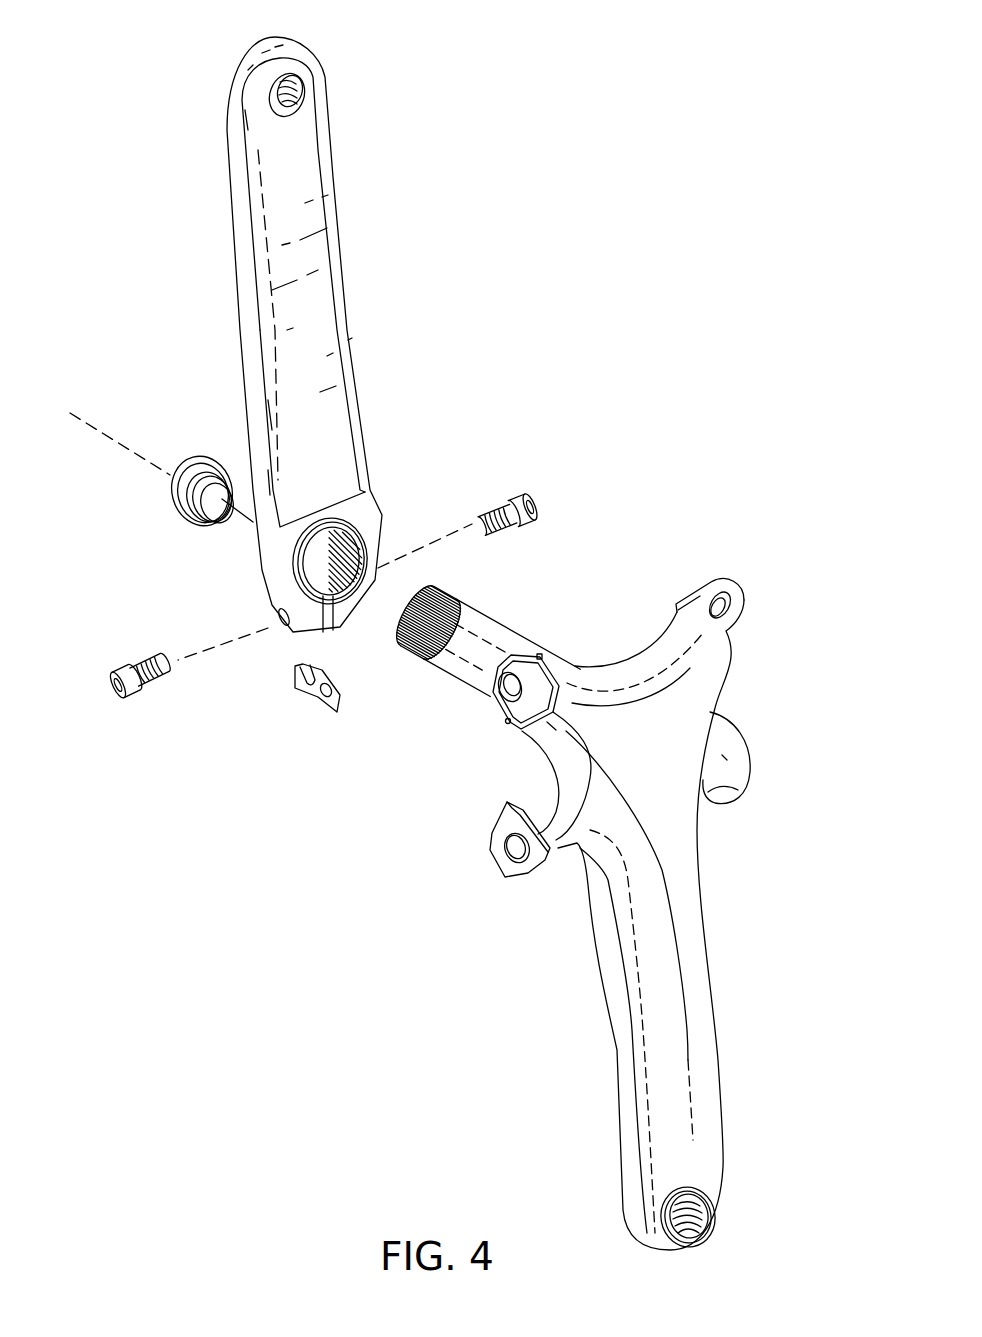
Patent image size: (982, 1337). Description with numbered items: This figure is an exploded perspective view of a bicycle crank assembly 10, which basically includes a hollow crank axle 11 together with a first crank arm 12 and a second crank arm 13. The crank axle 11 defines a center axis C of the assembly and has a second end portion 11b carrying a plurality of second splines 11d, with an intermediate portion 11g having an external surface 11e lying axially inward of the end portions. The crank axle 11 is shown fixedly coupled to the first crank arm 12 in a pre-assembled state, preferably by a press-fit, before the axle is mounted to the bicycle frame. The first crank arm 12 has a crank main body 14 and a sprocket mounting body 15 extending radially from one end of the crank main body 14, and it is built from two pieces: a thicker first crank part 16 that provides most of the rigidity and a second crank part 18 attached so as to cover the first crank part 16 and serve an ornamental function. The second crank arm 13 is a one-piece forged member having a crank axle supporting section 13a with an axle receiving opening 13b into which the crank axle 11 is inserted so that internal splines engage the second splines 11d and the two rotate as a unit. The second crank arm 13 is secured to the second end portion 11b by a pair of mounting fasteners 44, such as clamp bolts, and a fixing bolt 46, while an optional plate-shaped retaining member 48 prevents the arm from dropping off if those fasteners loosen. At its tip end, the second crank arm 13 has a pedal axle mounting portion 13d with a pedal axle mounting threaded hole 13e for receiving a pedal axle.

The bicycle crank assembly 10 is at (655, 243).
The crank axle 11 is at (496, 643).
The second end portion 11b is at (405, 650).
The second splines 11d is at (436, 594).
The external surface 11e is at (475, 662).
The intermediate portion 11g is at (550, 640).
The first crank arm 12 is at (690, 548).
The second crank arm 13 is at (331, 333).
The crank axle supporting section 13a is at (390, 547).
The axle receiving opening 13b is at (352, 586).
The pedal axle mounting portion 13d is at (340, 90).
The pedal axle mounting threaded hole 13e is at (290, 88).
The crank main body 14 is at (655, 870).
The sprocket mounting body 15 is at (752, 703).
The first crank part 16 is at (517, 880).
The second crank part 18 is at (610, 1040).
The mounting fasteners 44 is at (125, 697).
The fixing bolt 46 is at (180, 540).
The retaining member 48 is at (302, 698).
The center axis C is at (88, 420).